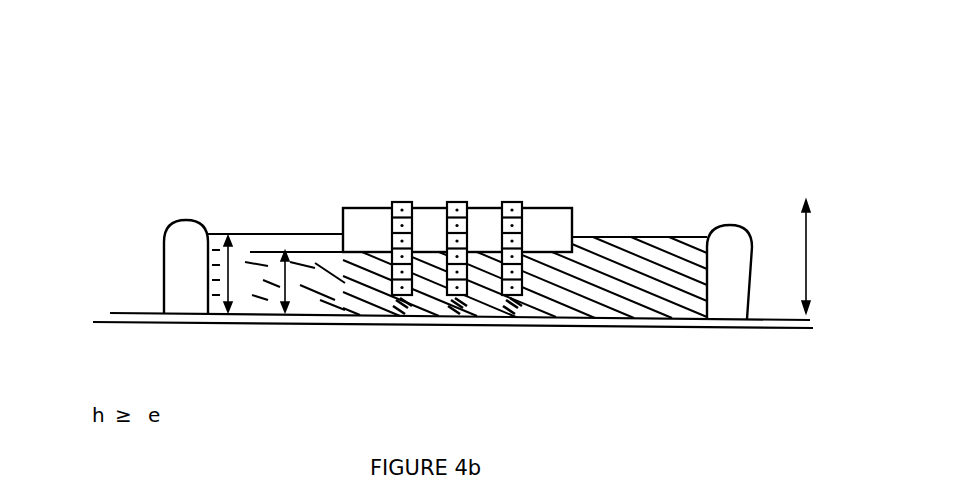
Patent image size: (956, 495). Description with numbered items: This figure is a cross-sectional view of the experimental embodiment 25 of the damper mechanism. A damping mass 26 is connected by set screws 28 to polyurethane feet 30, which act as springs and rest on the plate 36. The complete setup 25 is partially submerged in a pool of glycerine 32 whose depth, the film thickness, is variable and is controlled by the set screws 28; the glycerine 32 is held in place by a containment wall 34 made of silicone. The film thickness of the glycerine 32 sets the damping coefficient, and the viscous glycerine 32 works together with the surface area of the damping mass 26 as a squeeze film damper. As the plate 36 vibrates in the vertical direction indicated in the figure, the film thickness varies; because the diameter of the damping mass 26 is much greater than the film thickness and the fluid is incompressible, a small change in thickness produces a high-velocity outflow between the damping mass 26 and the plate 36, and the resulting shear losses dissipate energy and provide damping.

The experimental embodiment 25 is at (182, 153).
The damping mass 26 is at (546, 208).
The set screws 28 is at (542, 252).
The polyurethane feet 30 is at (395, 290).
The glycerine 32 is at (650, 270).
The containment wall 34 is at (752, 222).
The plate 36 is at (168, 323).